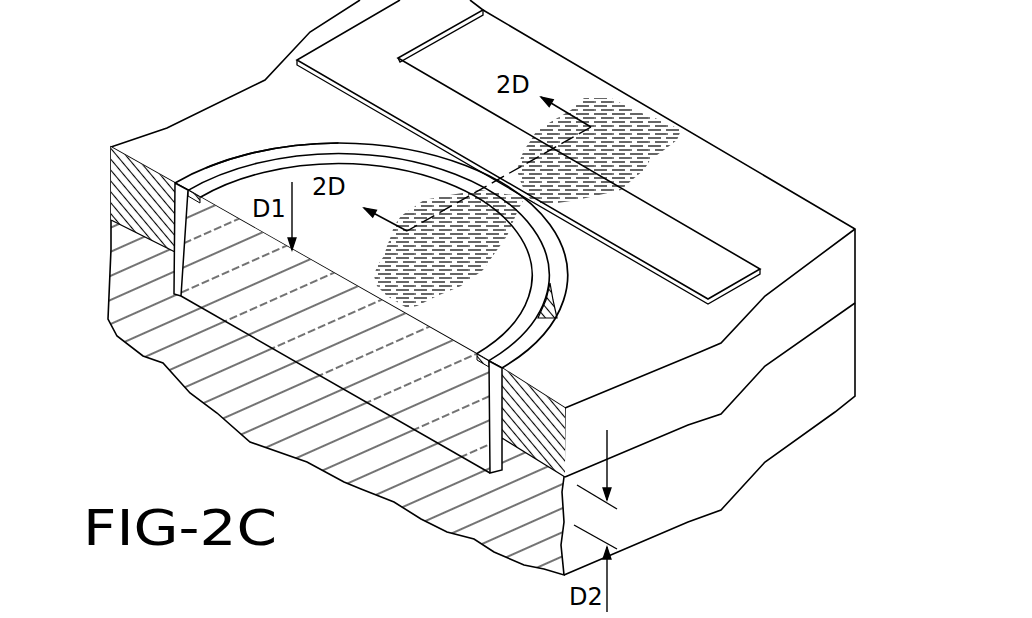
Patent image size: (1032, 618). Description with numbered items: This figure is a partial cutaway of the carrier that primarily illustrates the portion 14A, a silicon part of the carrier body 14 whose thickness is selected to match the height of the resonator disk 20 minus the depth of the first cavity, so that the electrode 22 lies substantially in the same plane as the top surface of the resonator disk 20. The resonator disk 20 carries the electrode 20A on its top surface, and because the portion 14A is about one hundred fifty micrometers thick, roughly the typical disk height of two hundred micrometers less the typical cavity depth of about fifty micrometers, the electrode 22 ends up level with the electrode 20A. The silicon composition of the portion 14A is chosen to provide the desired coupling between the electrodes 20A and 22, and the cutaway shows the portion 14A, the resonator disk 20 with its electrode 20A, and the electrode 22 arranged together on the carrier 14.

The substrate body 14 is at (210, 378).
The portion 14A is at (140, 186).
The resonator disk 20 is at (480, 318).
The electrode 20A is at (248, 167).
The electrode 22 is at (671, 246).